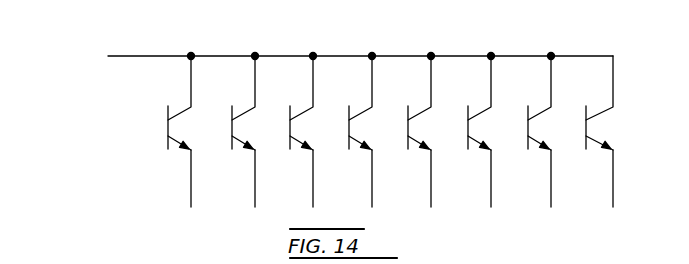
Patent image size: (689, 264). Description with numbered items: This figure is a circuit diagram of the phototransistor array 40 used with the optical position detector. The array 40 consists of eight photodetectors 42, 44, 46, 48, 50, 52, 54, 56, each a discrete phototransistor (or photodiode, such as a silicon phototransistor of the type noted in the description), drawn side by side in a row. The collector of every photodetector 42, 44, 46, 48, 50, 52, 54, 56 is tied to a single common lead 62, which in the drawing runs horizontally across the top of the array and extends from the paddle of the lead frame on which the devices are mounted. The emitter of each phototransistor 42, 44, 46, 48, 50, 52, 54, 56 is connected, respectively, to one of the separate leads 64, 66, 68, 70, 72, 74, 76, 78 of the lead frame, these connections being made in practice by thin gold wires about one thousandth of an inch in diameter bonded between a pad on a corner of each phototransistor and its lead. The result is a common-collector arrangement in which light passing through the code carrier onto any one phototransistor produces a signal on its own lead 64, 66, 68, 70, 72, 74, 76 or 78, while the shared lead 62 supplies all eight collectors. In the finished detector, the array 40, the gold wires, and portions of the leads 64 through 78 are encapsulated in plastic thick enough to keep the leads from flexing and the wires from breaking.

The array 40 is at (113, 122).
The photodetector 42 is at (168, 128).
The photodetector 44 is at (232, 128).
The photodetector 46 is at (290, 128).
The photodetector 48 is at (349, 128).
The photodetector 50 is at (408, 128).
The photodetector 52 is at (468, 128).
The photodetector 54 is at (528, 128).
The photodetector 56 is at (586, 128).
The common lead 62 is at (566, 57).
The lead 64 is at (191, 180).
The lead 66 is at (255, 180).
The lead 68 is at (313, 180).
The lead 70 is at (372, 180).
The lead 72 is at (431, 180).
The lead 74 is at (491, 180).
The lead 76 is at (551, 180).
The lead 78 is at (613, 180).